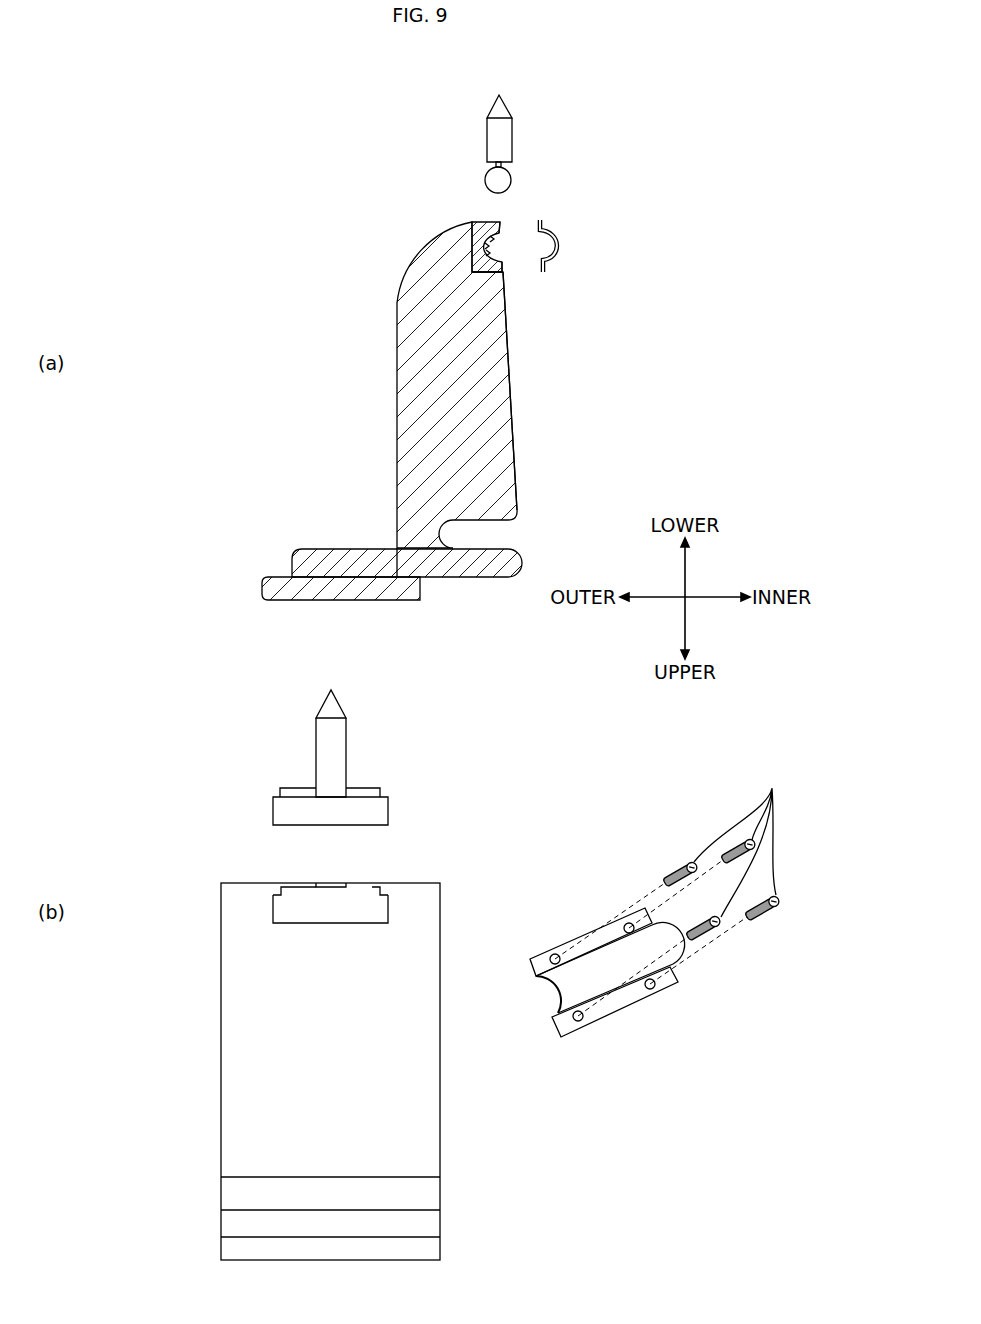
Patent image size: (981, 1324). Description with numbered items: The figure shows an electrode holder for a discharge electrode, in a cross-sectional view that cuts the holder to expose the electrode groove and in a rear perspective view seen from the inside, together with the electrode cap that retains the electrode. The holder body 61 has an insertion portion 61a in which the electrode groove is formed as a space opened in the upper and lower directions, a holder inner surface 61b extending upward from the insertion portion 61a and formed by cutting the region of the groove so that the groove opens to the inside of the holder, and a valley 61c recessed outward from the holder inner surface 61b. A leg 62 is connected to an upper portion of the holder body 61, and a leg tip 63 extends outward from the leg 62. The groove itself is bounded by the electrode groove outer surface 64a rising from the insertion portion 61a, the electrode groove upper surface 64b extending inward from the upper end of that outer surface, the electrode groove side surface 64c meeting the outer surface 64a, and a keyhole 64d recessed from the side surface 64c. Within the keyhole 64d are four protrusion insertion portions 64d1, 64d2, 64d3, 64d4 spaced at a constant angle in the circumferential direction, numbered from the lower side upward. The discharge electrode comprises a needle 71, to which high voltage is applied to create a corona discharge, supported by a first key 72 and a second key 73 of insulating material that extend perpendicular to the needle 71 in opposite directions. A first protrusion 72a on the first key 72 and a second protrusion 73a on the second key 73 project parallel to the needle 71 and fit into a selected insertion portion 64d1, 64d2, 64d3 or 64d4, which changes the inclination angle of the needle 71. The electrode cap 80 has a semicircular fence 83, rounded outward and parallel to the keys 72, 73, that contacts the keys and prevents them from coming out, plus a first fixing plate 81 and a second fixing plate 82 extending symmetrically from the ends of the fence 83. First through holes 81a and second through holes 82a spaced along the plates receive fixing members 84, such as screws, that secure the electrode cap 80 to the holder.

The holder body 61 is at (413, 413).
The insertion portion 61a is at (482, 222).
The holder inner surface 61b is at (513, 375).
The valley 61c is at (245, 1193).
The leg 62 is at (303, 570).
The leg tip 63 is at (278, 598).
The electrode groove outer surface 64a is at (480, 275).
The electrode groove upper surface 64b is at (497, 272).
The electrode groove side surface 64c is at (477, 237).
The keyhole 64d is at (497, 257).
The first protrusion insertion portion 64d1 is at (491, 233).
The second protrusion insertion portion 64d2 is at (482, 232).
The third protrusion insertion portion 64d3 is at (478, 247).
The fourth protrusion insertion portion 64d4 is at (480, 257).
The needle 71 is at (503, 132).
The first key 72 is at (503, 180).
The first protrusion 72a is at (501, 163).
The second key 73 is at (390, 807).
The second protrusion 73a is at (368, 788).
The electrode cap 80 is at (566, 235).
The first fixing plate 81 is at (540, 967).
The first through hole 81a is at (555, 954).
The second fixing plate 82 is at (560, 1030).
The second through hole 82a is at (578, 1021).
The fence 83 is at (573, 983).
The fixing member 84 is at (670, 890).